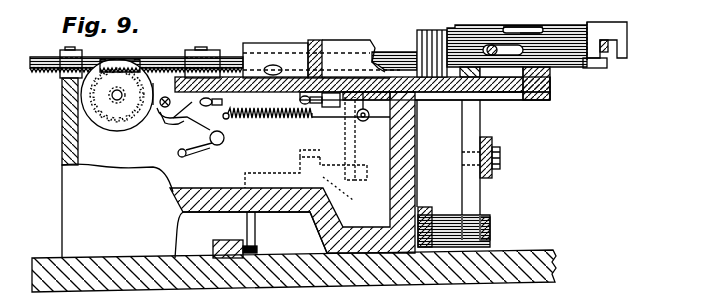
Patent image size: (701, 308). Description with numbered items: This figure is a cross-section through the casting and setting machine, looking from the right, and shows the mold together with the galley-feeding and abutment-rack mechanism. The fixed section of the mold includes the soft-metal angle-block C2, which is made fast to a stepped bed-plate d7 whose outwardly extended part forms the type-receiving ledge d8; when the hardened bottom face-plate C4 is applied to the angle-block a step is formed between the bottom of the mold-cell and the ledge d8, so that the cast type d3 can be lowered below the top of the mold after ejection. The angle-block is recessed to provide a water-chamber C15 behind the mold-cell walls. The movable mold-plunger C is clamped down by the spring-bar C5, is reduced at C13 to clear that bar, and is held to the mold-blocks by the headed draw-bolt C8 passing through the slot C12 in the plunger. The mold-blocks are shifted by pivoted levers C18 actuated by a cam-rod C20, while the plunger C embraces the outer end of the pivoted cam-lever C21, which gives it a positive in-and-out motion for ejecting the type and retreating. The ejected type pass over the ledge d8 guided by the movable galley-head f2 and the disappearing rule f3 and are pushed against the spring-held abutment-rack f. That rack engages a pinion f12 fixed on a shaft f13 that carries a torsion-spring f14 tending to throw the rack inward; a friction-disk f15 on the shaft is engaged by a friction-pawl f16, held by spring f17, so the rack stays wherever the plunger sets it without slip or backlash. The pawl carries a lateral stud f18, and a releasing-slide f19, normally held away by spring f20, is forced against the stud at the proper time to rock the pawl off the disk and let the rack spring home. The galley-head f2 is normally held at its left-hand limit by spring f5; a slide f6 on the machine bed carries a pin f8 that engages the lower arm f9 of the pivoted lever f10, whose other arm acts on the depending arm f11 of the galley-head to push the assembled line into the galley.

The abutment-rack f is at (173, 60).
The galley head f2 is at (380, 42).
The disappearing rule f3 is at (343, 43).
The spring f5 is at (365, 122).
The slide f6 is at (213, 247).
The pin f8 is at (258, 247).
The lower arm f9 is at (250, 225).
The pivoted lever f10 is at (238, 175).
The depending arm f11 is at (345, 135).
The pinion f12 is at (118, 60).
The shaft f13 is at (110, 97).
The torsion-spring f14 is at (153, 91).
The friction-disk f15 is at (93, 115).
The friction-pawl f16 is at (183, 115).
The spring f17 is at (212, 142).
The lateral stud f18 is at (160, 113).
The releasing-slide f19 is at (267, 117).
The spring f20 is at (297, 120).
The type d3 is at (437, 33).
The bed-plate d7 is at (445, 95).
The type-receiving ledge d8 is at (340, 85).
The mold-plunger C is at (517, 60).
The angle-block C2 is at (530, 76).
The hardened face-plate C4 is at (558, 86).
The spring-bar C5 is at (493, 32).
The draw-bolt C8 is at (493, 46).
The slot C12 is at (523, 70).
The reduced portion C13 is at (526, 78).
The water-chamber C15 is at (525, 28).
The pivoted levers C18 is at (472, 168).
The cam-rod C20 is at (492, 172).
The cam-lever C21 is at (607, 58).